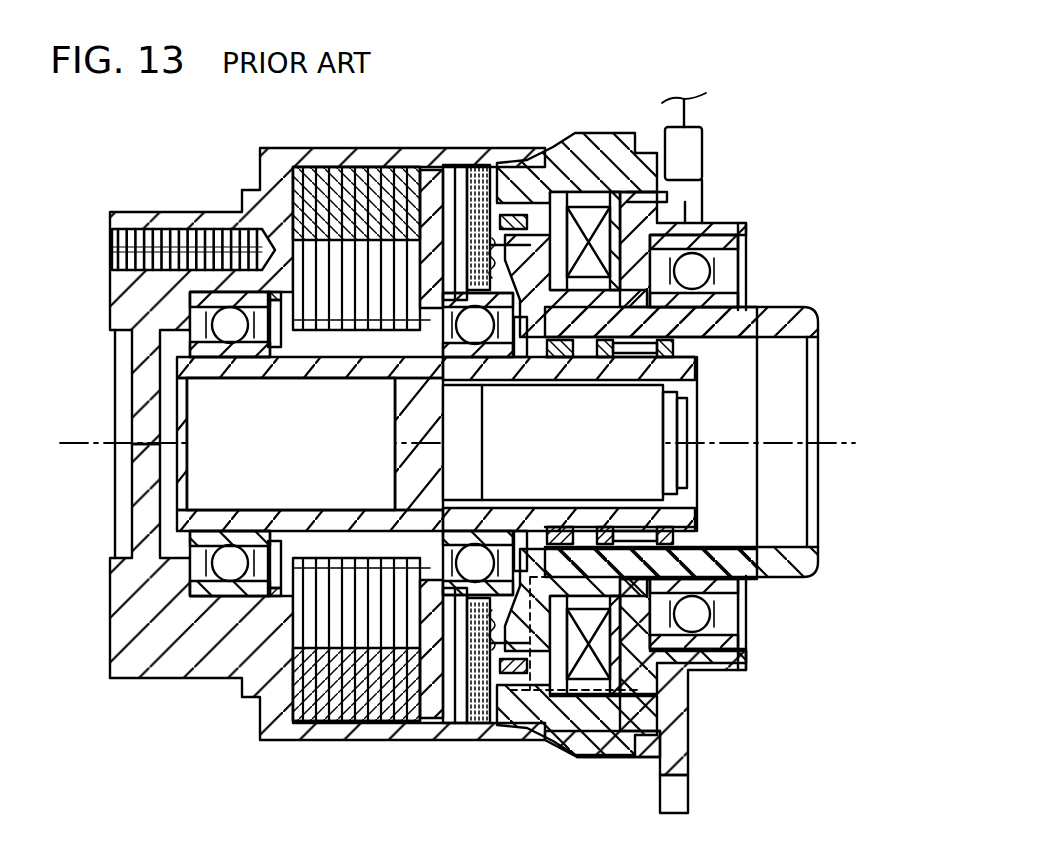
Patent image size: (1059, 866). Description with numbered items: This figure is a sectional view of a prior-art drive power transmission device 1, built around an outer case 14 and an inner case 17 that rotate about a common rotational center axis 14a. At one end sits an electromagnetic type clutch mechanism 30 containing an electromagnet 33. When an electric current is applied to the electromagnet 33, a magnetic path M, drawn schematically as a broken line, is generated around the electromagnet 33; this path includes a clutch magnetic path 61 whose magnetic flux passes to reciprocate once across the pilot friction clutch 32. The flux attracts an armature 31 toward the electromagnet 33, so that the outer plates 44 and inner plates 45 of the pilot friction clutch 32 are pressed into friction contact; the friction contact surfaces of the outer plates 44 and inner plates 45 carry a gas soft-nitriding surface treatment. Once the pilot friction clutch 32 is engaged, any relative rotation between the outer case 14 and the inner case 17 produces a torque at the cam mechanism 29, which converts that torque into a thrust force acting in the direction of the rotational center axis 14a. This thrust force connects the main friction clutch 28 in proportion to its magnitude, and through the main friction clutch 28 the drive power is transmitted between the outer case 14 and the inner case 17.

The housing 1 is at (167, 688).
The outer case 14 is at (178, 210).
The rotational center axis 14a is at (232, 445).
The inner case 17 is at (708, 359).
The main friction clutch 28 is at (333, 165).
The cam mechanism 29 is at (426, 163).
The electromagnetic type clutch mechanism 30 is at (640, 97).
The armature 31 is at (454, 165).
The pilot friction clutch 32 is at (484, 165).
The electromagnet 33 is at (597, 152).
The outer plates 44 is at (511, 163).
The inner plates 45 is at (496, 238).
The clutch magnetic path 61 is at (466, 735).
The magnetic path M is at (612, 735).